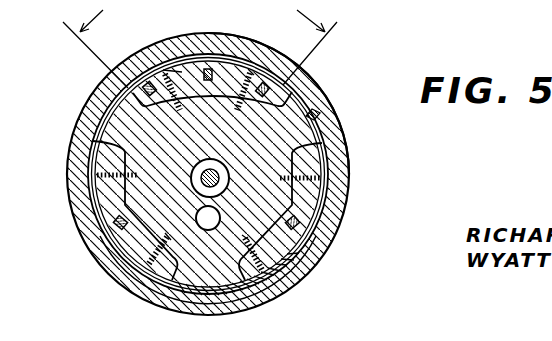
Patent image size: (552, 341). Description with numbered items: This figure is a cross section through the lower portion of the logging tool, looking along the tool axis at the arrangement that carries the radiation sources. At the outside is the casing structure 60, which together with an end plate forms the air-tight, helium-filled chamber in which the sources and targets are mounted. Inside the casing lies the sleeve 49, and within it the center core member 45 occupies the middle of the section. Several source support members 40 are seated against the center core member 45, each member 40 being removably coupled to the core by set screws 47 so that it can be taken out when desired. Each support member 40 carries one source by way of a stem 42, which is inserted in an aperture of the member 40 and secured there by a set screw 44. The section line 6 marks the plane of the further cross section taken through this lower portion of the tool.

The section line 6— 6 is at (200, 44).
The source support member 40 is at (228, 70).
The stem 42 is at (308, 258).
The set screw 44 is at (292, 228).
The center core member 45 is at (103, 115).
The set screw 47 is at (320, 178).
The sleeve 49 is at (313, 125).
The casing structure 60 is at (312, 80).